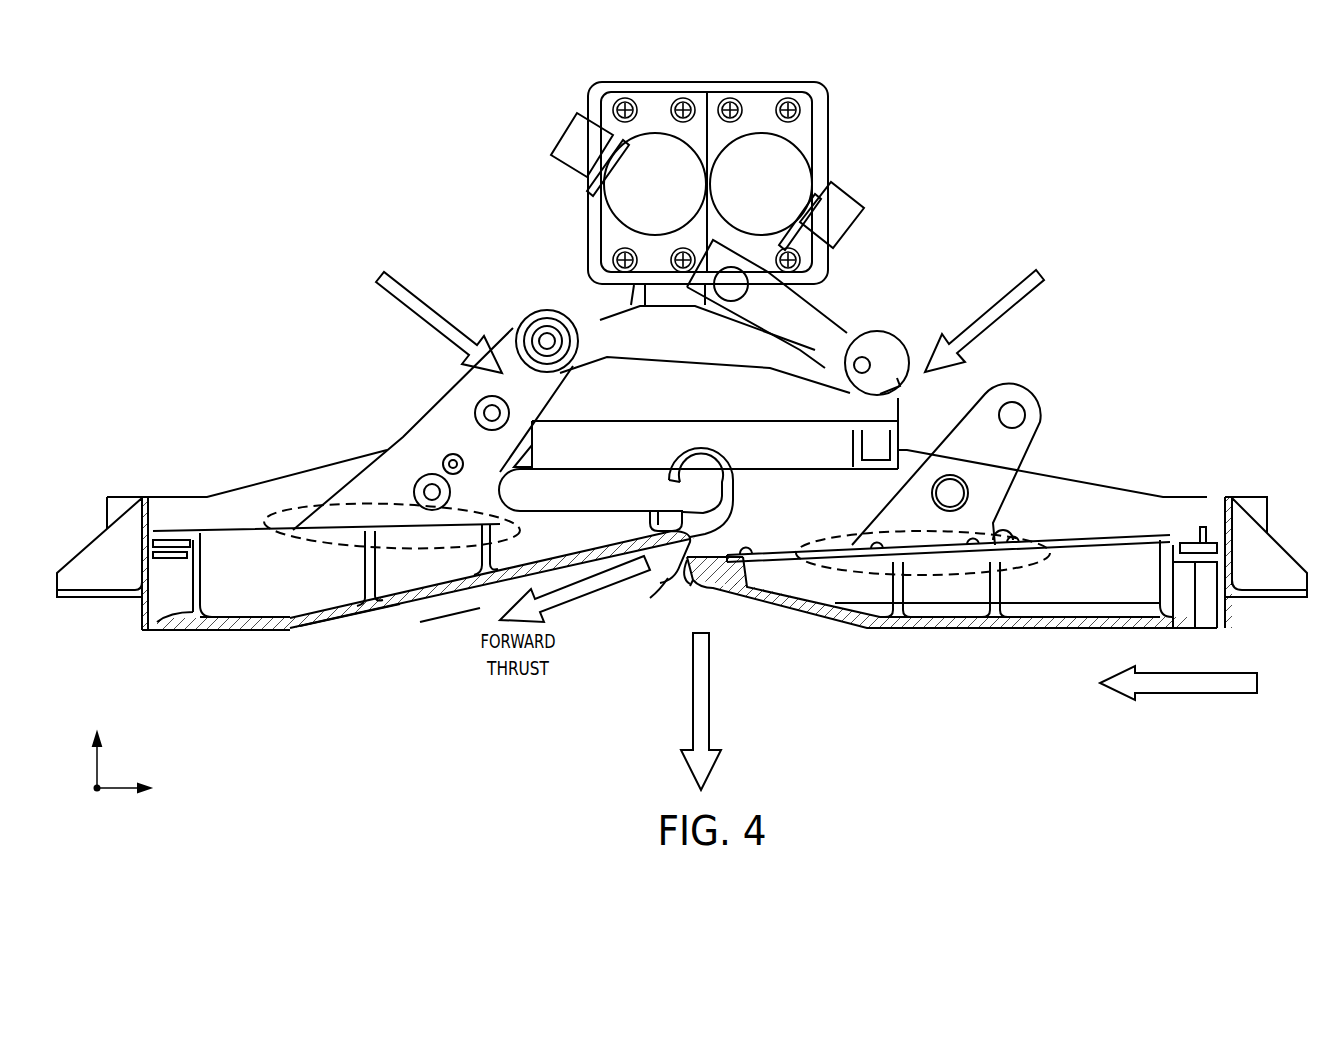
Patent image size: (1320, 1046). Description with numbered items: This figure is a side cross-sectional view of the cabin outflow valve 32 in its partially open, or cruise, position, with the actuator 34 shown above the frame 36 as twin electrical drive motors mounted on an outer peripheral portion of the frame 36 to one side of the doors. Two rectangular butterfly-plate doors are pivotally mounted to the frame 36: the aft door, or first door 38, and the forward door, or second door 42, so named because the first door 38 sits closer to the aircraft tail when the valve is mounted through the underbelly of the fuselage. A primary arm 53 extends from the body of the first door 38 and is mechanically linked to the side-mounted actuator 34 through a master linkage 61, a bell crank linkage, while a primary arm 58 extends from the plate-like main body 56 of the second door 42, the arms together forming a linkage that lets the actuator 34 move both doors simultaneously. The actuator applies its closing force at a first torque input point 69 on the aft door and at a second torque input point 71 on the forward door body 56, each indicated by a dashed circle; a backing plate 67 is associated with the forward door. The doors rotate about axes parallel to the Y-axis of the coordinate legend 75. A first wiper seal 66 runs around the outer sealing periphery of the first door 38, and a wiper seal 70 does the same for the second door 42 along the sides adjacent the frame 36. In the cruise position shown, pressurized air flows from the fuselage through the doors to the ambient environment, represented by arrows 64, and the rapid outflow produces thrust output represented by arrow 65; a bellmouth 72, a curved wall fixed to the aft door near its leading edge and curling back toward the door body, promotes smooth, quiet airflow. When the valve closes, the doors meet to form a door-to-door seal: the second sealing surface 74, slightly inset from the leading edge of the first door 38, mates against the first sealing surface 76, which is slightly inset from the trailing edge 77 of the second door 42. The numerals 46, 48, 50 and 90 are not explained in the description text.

The cabin outflow valve 32 is at (272, 177).
The actuator 34 is at (700, 83).
The frame 36 is at (250, 490).
The first door 38 is at (262, 600).
The second door 42 is at (960, 620).
The gravity direction 46 is at (692, 680).
The ambient airflow 48 is at (1257, 683).
The first door panel 50 is at (408, 610).
The primary arm 53 is at (405, 438).
The main body 56 is at (830, 622).
The primary arm 58 is at (1042, 412).
The master linkage 61 is at (830, 323).
The arrows 64 is at (382, 276).
The arrow 65 is at (595, 598).
The first wiper seal 66 is at (170, 540).
The backing plate 67 is at (832, 545).
The first torque input point 69 is at (418, 486).
The wiper seal 70 is at (1220, 548).
The second torque input point 71 is at (972, 520).
The bellmouth 72 is at (720, 453).
The second sealing surface 74 is at (650, 522).
The coordinate legend 75 is at (97, 765).
The first sealing surface 76 is at (710, 588).
The trailing edge 77 is at (650, 598).
The door surface 90 is at (458, 608).